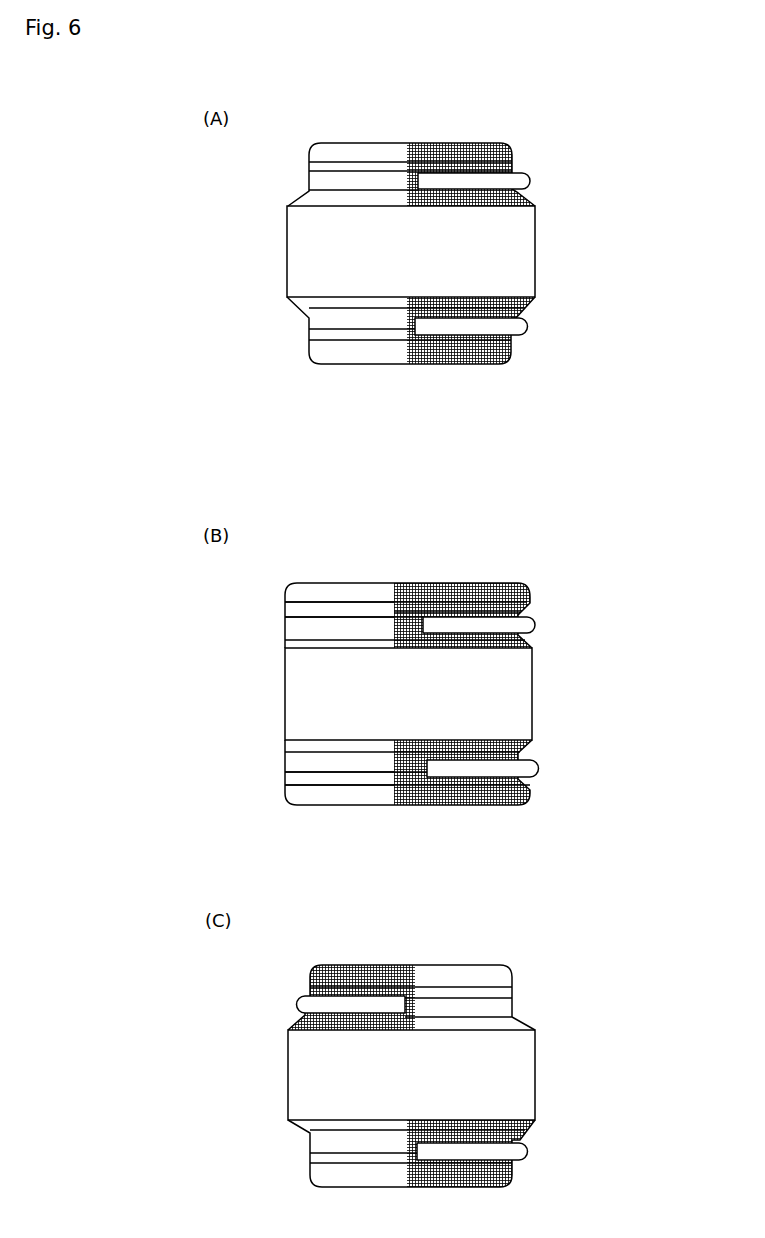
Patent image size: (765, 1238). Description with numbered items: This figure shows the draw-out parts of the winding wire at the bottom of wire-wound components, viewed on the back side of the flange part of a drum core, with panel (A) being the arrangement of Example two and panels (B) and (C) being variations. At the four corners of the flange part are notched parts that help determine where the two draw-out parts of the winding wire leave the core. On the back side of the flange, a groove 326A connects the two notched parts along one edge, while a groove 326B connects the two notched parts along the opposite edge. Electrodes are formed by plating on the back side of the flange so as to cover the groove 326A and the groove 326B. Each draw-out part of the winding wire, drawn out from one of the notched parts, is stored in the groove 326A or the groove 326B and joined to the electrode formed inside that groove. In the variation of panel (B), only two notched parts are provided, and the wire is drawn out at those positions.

The groove 326A is at (340, 625).
The groove 326B is at (340, 762).